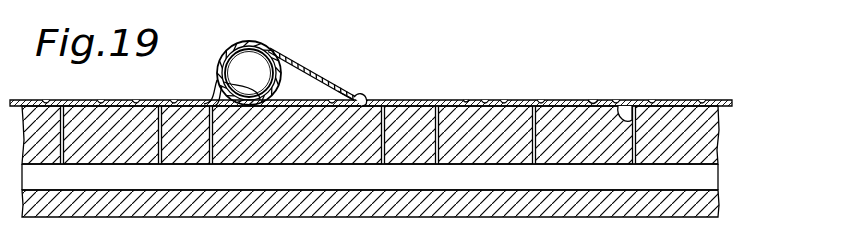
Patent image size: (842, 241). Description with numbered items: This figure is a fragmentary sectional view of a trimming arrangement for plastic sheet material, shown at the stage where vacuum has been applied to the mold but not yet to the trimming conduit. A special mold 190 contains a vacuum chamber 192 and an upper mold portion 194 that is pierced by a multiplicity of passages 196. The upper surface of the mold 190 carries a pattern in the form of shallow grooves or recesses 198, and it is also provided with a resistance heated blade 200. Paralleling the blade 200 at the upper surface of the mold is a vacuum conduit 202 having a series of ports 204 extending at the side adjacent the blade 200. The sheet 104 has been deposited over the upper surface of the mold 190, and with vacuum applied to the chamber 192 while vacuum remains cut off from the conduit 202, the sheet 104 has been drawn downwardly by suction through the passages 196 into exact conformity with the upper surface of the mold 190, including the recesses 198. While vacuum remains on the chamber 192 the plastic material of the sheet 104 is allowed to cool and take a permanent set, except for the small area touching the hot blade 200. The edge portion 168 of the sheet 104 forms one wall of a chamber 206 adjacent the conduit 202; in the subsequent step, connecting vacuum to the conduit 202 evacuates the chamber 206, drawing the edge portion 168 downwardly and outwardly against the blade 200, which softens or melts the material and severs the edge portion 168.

The sheet 104 is at (465, 100).
The edge portion 168 is at (320, 77).
The mold 190 is at (628, 216).
The vacuum chamber 192 is at (474, 178).
The upper mold portion 194 is at (715, 126).
The passages 196 is at (618, 103).
The shallow grooves or recesses 198 is at (593, 101).
The resistance heated blade 200 is at (364, 95).
The vacuum conduit 202 is at (282, 58).
The ports 204 is at (218, 80).
The chamber 206 is at (340, 91).